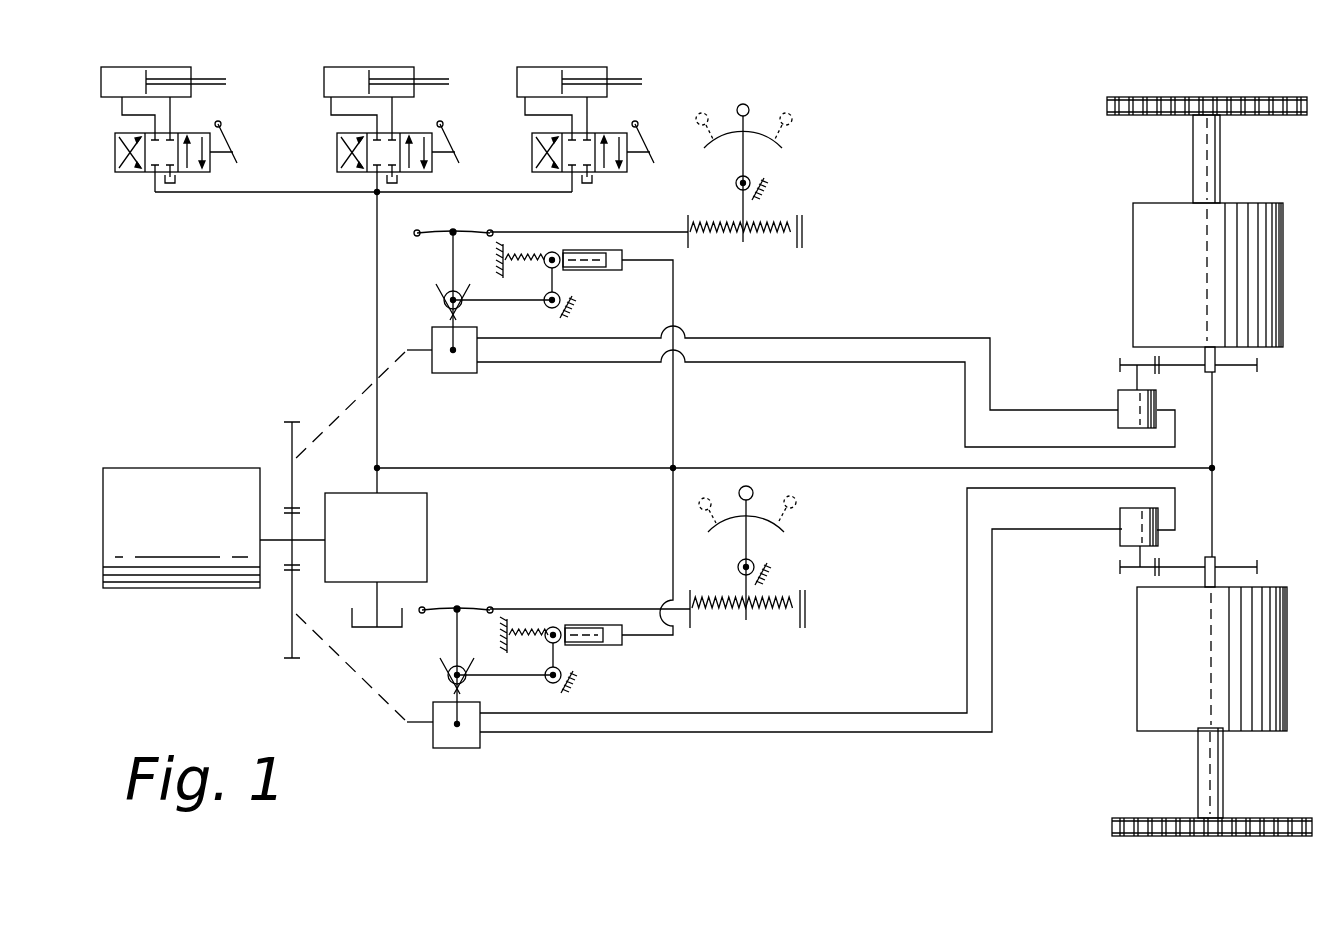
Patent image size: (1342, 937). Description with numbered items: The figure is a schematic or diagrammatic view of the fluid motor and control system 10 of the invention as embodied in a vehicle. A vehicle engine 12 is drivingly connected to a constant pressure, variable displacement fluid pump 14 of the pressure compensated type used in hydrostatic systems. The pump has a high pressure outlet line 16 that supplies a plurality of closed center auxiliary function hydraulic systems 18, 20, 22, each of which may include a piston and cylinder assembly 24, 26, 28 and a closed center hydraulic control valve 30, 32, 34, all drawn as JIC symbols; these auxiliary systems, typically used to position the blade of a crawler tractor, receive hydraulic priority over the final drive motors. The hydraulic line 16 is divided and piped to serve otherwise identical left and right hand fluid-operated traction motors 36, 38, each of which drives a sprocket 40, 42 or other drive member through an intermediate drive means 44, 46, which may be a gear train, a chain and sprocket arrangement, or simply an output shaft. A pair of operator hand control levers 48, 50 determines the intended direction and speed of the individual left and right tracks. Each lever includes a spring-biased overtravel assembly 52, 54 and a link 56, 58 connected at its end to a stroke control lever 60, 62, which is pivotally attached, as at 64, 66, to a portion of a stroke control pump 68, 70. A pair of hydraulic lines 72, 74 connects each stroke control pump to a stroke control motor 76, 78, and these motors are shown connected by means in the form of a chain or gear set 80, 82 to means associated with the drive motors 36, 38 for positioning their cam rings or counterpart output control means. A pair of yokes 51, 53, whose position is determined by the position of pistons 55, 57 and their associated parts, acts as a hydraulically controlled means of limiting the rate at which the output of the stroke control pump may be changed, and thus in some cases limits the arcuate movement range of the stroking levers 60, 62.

The fluid motor and control system 10 is at (182, 688).
The vehicle engine 12 is at (198, 468).
The variable displacement fluid pump 14 is at (364, 551).
The high pressure outlet line 16 is at (542, 462).
The closed center auxiliary function hydraulic system 18 is at (112, 141).
The closed center auxiliary function hydraulic system 20 is at (414, 130).
The closed center auxiliary function hydraulic system 22 is at (672, 100).
The piston and cylinder assembly 24 is at (214, 80).
The piston and cylinder assembly 26 is at (434, 78).
The piston and cylinder assembly 28 is at (618, 79).
The closed center hydraulic control valve 30 is at (153, 172).
The closed center hydraulic control valve 32 is at (375, 180).
The closed center hydraulic control valve 34 is at (616, 172).
The traction motor 36 is at (1137, 662).
The traction motor 38 is at (1133, 242).
The sprocket 40 is at (1192, 835).
The sprocket 42 is at (1169, 97).
The intermediate drive means 44 is at (1198, 770).
The intermediate drive means 46 is at (1193, 158).
The operator hand control lever 48 is at (752, 527).
The operator hand control lever 50 is at (755, 123).
The yoke 51 is at (460, 677).
The spring-biased overtravel assembly 52 is at (697, 630).
The yoke 53 is at (462, 303).
The spring-biased overtravel assembly 54 is at (697, 249).
The piston 55 is at (580, 645).
The link 56 is at (519, 610).
The piston 57 is at (593, 271).
The link 58 is at (492, 232).
The stroke control lever 60 is at (455, 641).
The stroke control lever 62 is at (452, 258).
The pivotal attachment 64 is at (466, 748).
The pivotal attachment 66 is at (450, 349).
The stroke control pump 68 is at (446, 748).
The stroke control pump 70 is at (478, 370).
The pair of hydraulic lines 72 is at (770, 732).
The pair of hydraulic lines 74 is at (805, 338).
The stroke control motor 76 is at (1120, 524).
The stroke control motor 78 is at (1116, 408).
The chain or gear set 80 is at (1155, 570).
The chain or gear set 82 is at (1156, 364).